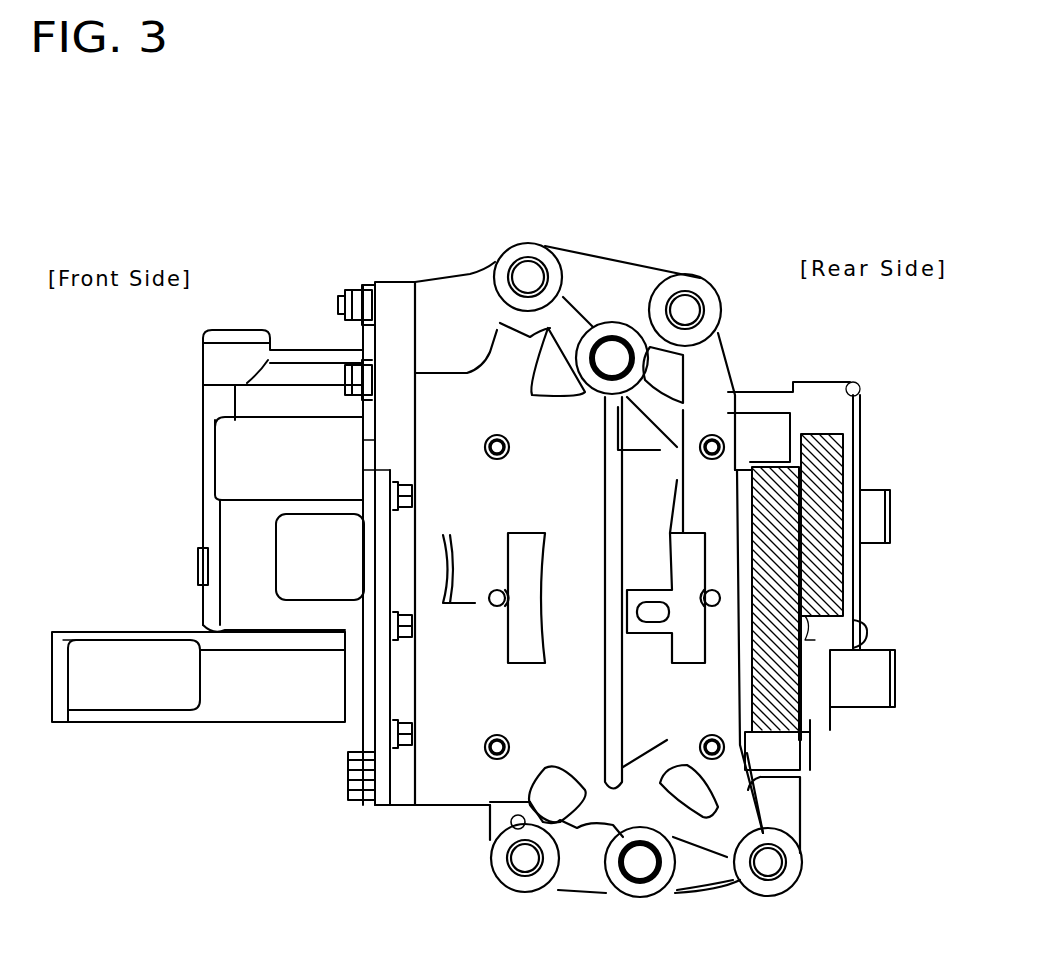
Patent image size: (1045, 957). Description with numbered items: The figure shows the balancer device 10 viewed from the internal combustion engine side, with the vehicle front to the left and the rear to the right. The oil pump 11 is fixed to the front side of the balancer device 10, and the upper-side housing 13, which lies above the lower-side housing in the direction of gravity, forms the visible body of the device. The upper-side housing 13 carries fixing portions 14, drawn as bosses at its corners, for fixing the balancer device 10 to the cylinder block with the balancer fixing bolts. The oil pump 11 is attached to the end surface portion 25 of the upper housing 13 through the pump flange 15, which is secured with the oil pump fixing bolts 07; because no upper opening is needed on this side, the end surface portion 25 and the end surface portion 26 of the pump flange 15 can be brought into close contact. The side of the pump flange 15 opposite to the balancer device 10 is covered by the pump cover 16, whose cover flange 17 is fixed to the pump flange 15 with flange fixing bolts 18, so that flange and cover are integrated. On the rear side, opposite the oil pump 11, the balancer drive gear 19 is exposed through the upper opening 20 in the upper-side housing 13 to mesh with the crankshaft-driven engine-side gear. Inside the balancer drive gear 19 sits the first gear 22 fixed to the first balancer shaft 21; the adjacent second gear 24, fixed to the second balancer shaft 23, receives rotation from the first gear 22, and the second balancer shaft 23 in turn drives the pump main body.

The balancer device 10 is at (638, 270).
The oil pump 11 is at (195, 449).
The upper-side housing 13 is at (450, 802).
The fixing portions 14 is at (520, 268).
The pump flange 15 is at (395, 305).
The pump cover 16 is at (220, 540).
The cover flange 17 is at (365, 558).
The flange fixing bolts 18 is at (410, 497).
The balancer drive gear 19 is at (832, 468).
The upper opening 20 is at (810, 636).
The first balancer shaft 21 is at (888, 518).
The first gear 22 is at (772, 462).
The second balancer shaft 23 is at (892, 680).
The second gear 24 is at (783, 690).
The end surface portion of the upper housing 25 is at (420, 408).
The end surface portion of the pump flange 26 is at (412, 452).
The oil pump fixing bolts 07 is at (348, 285).